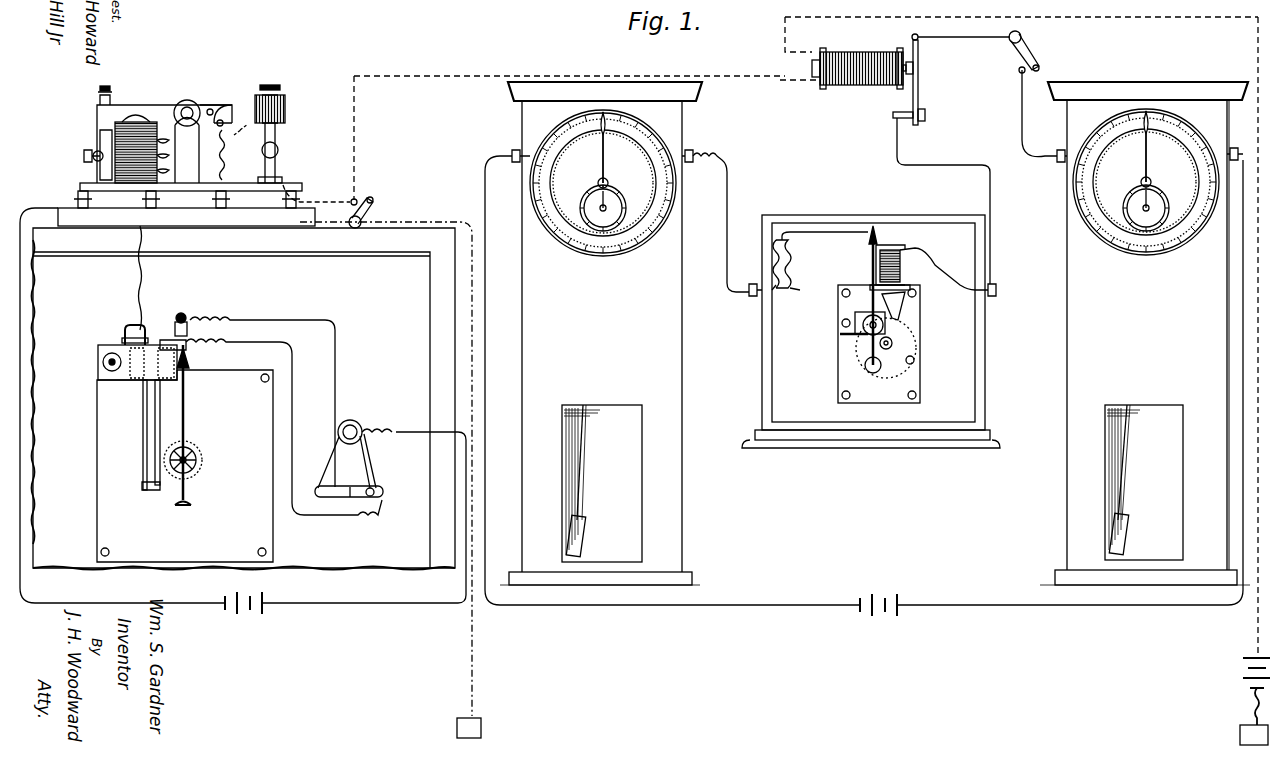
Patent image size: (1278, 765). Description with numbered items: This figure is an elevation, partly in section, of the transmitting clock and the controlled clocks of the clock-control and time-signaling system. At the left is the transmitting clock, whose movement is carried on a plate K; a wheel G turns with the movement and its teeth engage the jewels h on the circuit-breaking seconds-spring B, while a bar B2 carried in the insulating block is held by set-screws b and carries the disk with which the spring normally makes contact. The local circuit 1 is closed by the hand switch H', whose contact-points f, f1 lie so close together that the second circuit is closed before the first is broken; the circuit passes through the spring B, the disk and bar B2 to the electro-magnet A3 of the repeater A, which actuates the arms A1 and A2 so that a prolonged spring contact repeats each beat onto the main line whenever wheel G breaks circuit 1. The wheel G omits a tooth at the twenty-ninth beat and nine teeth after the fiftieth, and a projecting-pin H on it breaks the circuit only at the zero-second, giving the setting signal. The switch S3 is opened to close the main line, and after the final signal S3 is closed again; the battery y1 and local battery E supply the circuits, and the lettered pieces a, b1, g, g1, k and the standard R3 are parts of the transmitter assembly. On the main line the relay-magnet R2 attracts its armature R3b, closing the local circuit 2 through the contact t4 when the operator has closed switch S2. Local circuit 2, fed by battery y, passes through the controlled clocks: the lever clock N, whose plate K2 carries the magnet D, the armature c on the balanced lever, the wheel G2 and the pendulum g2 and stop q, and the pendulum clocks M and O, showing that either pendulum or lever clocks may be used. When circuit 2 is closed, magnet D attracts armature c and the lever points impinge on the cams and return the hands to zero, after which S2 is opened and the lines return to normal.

The local circuit 1 is at (241, 411).
The local circuit 2 is at (864, 343).
The repeater A is at (173, 141).
The arm A1 is at (158, 134).
The arm A2 is at (241, 135).
The electro-magnet A3 is at (162, 125).
The armature R3 is at (282, 134).
The relay-magnet R2 is at (1021, 53).
The line relay armature R3b is at (956, 79).
The switch S3 is at (551, 396).
The switch S2 is at (1034, 52).
The contact t4 is at (893, 116).
The battery E is at (863, 381).
The main battery y is at (877, 631).
The local battery y1 is at (241, 632).
The plate K is at (185, 466).
The regulator base plate K2 is at (879, 344).
The electromagnet box a is at (98, 362).
The jewels h is at (133, 327).
The set-screws b is at (168, 346).
The binding post b1 is at (186, 319).
The pendulum rod g is at (188, 425).
The pendulum foot g1 is at (194, 495).
The regulator pendulum g2 is at (865, 298).
The wheel G is at (192, 460).
The regulator wheel G2 is at (882, 353).
The seconds-spring B is at (165, 432).
The bar B2 is at (136, 435).
The contact piece k is at (150, 462).
The projecting-pin H is at (349, 458).
The contact-point f is at (309, 498).
The contact-point f1 is at (387, 495).
The pendulum-clock M is at (606, 333).
The pendulum-clock O is at (1145, 333).
The controlled clock N is at (871, 344).
The magnet D is at (883, 267).
The armature c is at (882, 310).
The stop q is at (855, 332).